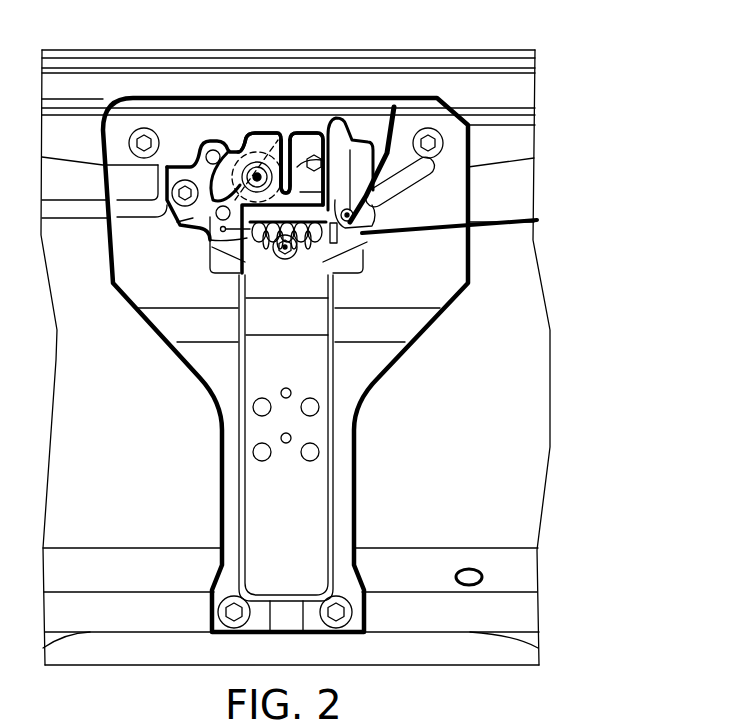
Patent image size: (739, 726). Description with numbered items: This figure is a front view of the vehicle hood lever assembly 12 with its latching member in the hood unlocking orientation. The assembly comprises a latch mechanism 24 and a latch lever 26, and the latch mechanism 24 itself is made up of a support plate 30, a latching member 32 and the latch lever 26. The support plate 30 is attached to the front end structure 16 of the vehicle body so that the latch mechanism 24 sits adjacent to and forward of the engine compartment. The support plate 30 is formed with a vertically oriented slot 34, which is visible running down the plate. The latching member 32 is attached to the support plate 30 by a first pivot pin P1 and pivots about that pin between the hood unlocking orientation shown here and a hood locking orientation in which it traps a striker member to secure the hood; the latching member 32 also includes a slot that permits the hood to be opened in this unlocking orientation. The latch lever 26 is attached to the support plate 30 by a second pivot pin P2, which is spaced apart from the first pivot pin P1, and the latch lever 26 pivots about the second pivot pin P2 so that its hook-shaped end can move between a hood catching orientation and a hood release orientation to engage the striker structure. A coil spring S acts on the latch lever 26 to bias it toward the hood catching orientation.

The front end structure 16 is at (492, 47).
The vehicle hood lever assembly 12 is at (414, 97).
The support plate 30 is at (200, 231).
The latching member 32 is at (250, 132).
The slot 34 is at (291, 165).
The latch mechanism 24 is at (312, 128).
The latch lever 26 is at (373, 246).
The first pivot pin P1 is at (248, 177).
The second pivot pin P2 is at (347, 222).
The coil spring S is at (262, 238).